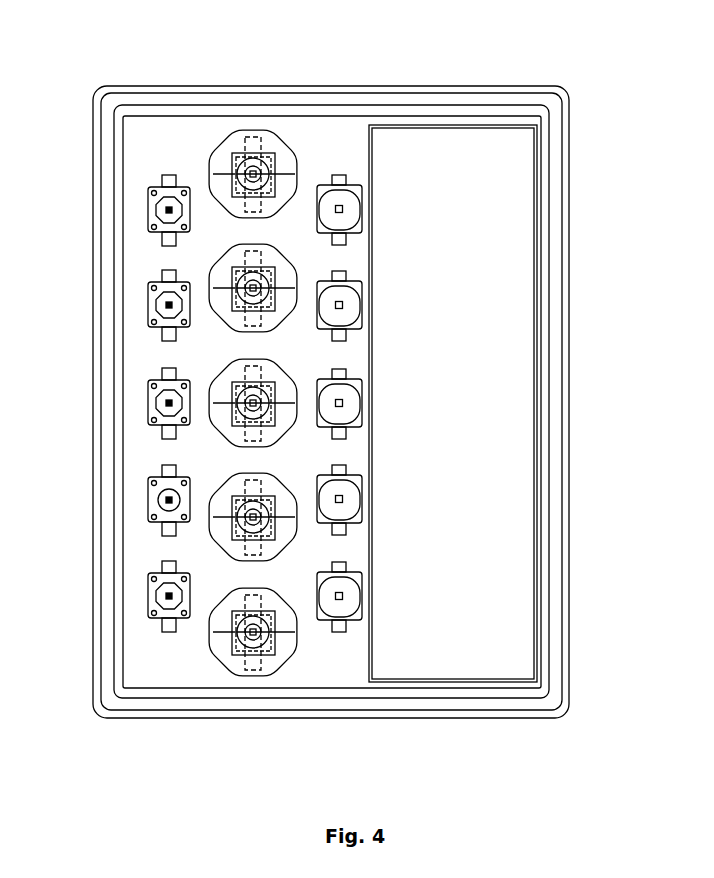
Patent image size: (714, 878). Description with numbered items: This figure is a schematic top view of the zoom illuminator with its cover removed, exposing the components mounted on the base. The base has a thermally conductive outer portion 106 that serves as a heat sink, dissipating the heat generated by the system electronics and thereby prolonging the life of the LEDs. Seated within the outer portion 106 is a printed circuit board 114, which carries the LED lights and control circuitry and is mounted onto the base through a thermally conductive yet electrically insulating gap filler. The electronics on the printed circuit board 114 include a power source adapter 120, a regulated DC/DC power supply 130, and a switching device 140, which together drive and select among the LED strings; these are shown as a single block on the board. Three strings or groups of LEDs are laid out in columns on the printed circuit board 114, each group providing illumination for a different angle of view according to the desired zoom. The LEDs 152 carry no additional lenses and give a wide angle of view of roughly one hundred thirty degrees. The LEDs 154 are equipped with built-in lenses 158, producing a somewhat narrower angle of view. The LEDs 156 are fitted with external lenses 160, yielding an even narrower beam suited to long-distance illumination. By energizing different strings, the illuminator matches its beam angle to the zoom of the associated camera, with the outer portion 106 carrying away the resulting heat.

The thermally conductive outer portion 106 is at (568, 138).
The printed circuit board 114 is at (177, 138).
The power source adapter 120 is at (474, 349).
The regulated DC/DC power supply 130 is at (474, 349).
The switching device 140 is at (463, 167).
The LEDs 152 is at (158, 202).
The LEDs 154 is at (325, 283).
The LEDs 156 is at (240, 267).
The built-in lenses 158 is at (347, 393).
The external lenses 160 is at (288, 170).